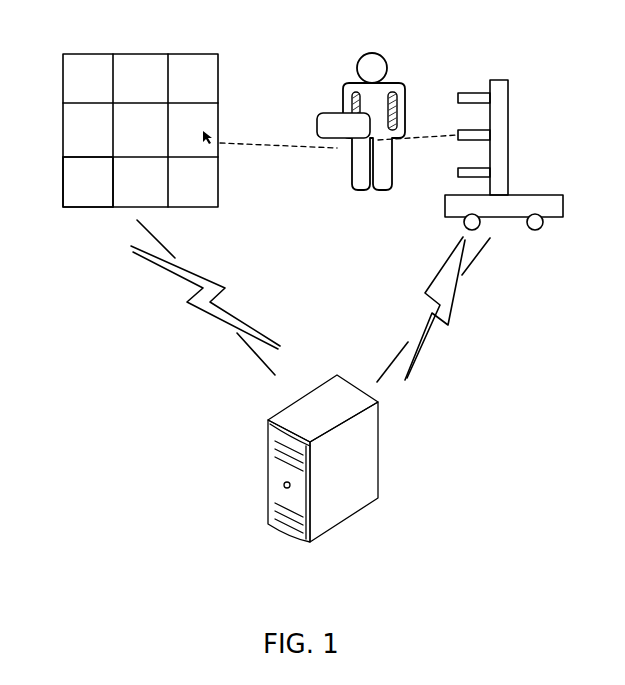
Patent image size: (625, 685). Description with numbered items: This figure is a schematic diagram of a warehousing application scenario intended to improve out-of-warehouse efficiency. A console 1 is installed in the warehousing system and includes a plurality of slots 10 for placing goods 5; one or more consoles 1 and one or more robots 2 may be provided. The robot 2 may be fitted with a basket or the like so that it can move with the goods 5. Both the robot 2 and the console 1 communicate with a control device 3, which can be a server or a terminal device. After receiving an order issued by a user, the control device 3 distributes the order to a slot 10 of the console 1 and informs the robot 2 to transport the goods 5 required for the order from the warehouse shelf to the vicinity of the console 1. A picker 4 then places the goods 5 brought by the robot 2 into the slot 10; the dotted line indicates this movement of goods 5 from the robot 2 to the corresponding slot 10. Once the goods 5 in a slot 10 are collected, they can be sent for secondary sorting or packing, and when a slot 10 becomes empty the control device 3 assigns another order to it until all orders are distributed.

The console 1 is at (91, 54).
The slot 10 is at (88, 194).
The robot 2 is at (504, 80).
The control device 3 is at (345, 528).
The picker 4 is at (386, 56).
The goods 5 is at (332, 113).